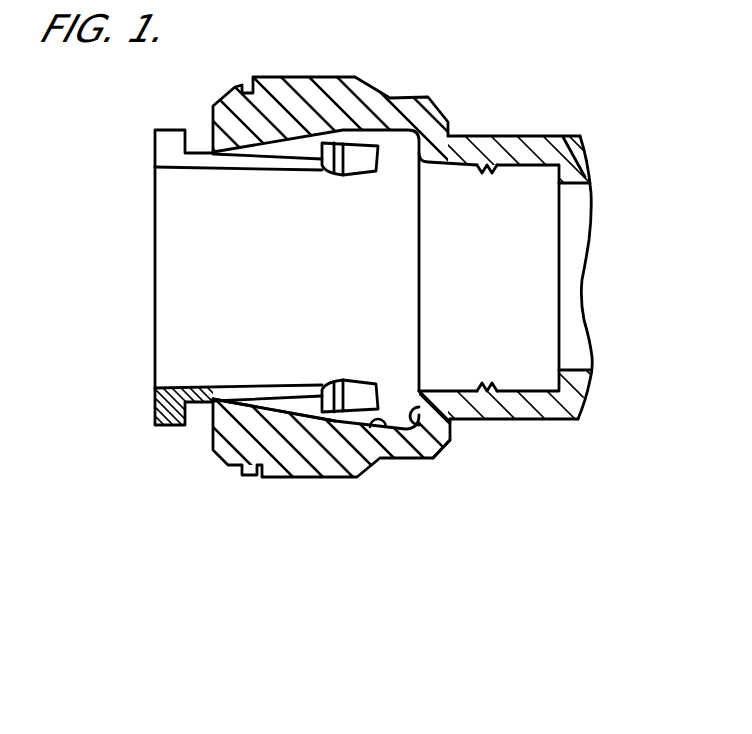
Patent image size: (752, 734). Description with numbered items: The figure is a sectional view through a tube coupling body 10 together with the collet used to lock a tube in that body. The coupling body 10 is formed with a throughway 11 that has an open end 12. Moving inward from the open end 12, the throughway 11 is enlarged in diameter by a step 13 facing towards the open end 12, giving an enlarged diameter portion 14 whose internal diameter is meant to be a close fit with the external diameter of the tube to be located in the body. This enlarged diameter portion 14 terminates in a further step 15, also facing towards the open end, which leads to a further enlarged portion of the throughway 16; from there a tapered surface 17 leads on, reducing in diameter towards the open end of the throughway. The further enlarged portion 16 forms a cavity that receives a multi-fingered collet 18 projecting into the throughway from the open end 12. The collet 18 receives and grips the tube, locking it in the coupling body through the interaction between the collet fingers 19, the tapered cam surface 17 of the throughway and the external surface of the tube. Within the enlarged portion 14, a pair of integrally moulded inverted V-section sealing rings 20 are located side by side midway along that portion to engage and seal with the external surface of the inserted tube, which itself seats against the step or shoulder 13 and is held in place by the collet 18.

The tube coupling body 10 is at (399, 56).
The throughway 11 is at (574, 228).
The open end 12 is at (212, 118).
The step 13 is at (552, 374).
The enlarged diameter portion 14 is at (524, 147).
The further step 15 is at (440, 443).
The further enlarged portion of the throughway 16 is at (385, 433).
The tapered surface 17 is at (293, 430).
The multi-fingered collet 18 is at (155, 152).
The collet fingers 19 is at (318, 168).
The sealing rings 20 is at (478, 172).